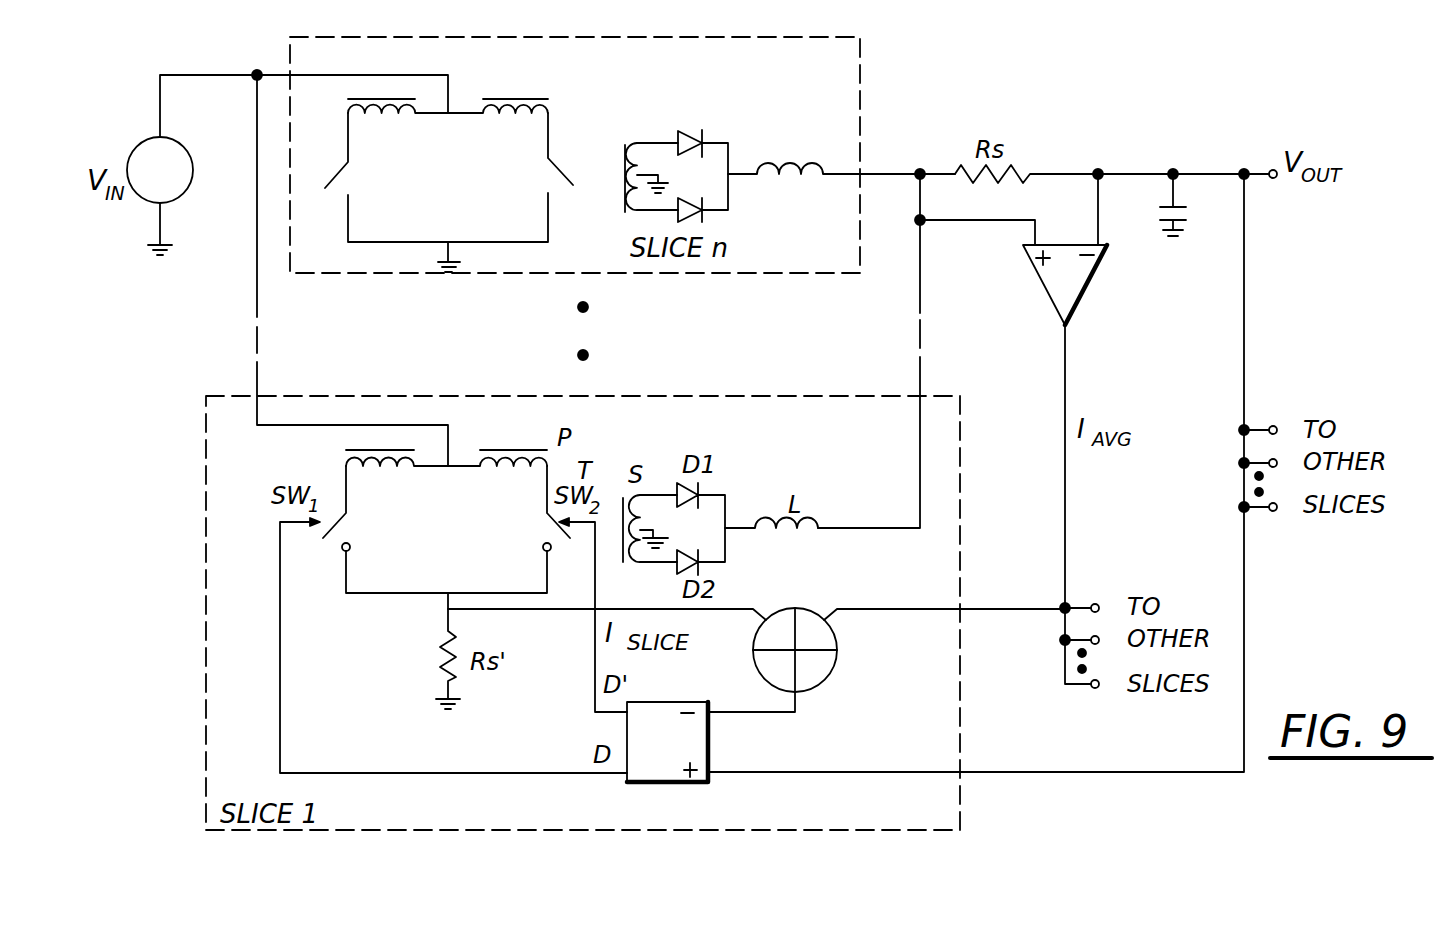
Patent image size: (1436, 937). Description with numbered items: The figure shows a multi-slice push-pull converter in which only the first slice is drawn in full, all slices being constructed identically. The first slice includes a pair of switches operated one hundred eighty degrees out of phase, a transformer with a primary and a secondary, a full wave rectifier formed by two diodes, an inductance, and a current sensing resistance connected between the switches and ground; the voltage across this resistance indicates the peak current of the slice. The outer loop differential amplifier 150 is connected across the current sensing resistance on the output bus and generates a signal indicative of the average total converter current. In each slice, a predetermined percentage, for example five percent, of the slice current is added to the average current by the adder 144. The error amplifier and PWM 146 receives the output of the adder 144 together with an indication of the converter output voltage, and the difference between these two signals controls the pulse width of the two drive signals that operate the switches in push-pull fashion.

The outer loop differential amplifier 150 is at (1077, 302).
The error amplifier and PWM 146 is at (658, 702).
The adder 144 is at (822, 683).